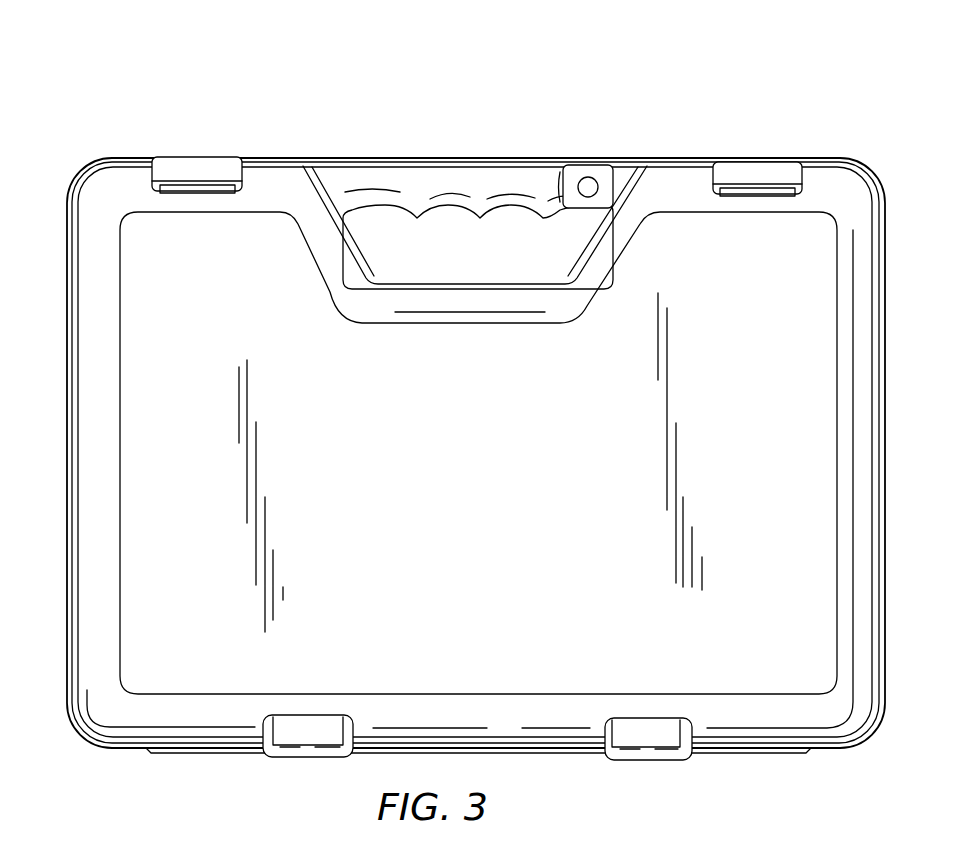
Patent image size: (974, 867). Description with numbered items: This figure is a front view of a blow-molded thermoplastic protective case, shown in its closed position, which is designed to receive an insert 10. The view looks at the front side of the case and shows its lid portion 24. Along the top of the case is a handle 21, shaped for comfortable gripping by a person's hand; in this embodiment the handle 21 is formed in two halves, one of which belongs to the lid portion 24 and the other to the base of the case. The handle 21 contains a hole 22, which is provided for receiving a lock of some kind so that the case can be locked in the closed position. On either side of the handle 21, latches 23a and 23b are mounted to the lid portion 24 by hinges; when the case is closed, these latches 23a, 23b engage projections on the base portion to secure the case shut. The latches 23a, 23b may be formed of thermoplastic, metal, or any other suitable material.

The insert 10 is at (886, 749).
The handle 21 is at (470, 192).
The hole 22 is at (597, 178).
The latch 23a is at (215, 165).
The latch 23b is at (752, 178).
The lid portion 24 is at (765, 435).